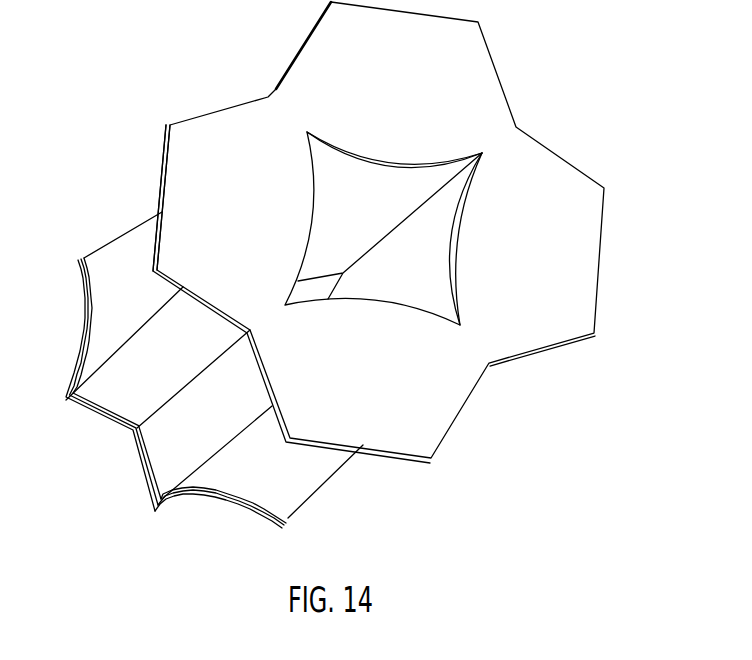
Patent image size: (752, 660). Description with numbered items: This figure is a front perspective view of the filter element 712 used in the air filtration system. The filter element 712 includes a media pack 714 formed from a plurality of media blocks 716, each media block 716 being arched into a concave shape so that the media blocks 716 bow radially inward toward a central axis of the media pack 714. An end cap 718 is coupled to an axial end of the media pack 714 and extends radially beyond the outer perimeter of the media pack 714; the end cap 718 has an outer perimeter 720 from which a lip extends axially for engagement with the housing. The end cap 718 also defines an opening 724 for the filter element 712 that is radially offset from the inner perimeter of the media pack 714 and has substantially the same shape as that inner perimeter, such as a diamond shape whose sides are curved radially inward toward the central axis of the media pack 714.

The filter element 712 is at (170, 67).
The media pack 714 is at (208, 460).
The media block 716 is at (127, 384).
The end cap 718 is at (468, 73).
The outer perimeter 720 is at (166, 145).
The opening 724 is at (350, 145).